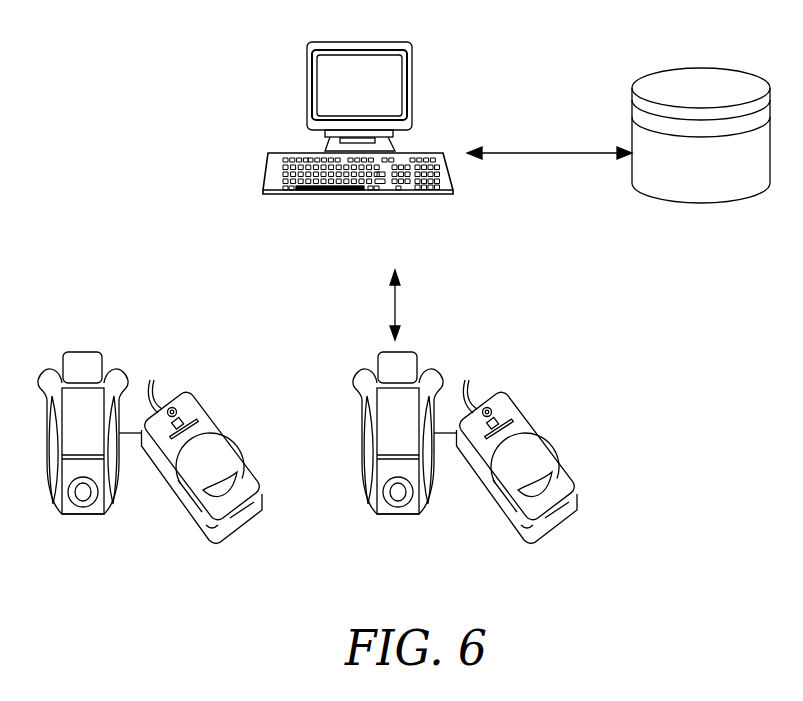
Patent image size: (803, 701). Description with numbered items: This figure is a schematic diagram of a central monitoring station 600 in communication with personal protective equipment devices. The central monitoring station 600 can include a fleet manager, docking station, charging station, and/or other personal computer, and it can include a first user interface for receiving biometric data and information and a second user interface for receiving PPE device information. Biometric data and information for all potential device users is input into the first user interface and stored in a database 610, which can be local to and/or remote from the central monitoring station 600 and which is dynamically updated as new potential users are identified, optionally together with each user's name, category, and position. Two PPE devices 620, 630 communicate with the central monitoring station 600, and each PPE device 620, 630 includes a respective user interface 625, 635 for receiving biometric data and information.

The central monitoring station 600 is at (392, 42).
The database 610 is at (699, 66).
The PPE device 620 is at (83, 350).
The user interface 625 is at (186, 390).
The PPE device 630 is at (361, 432).
The user interface 635 is at (549, 441).